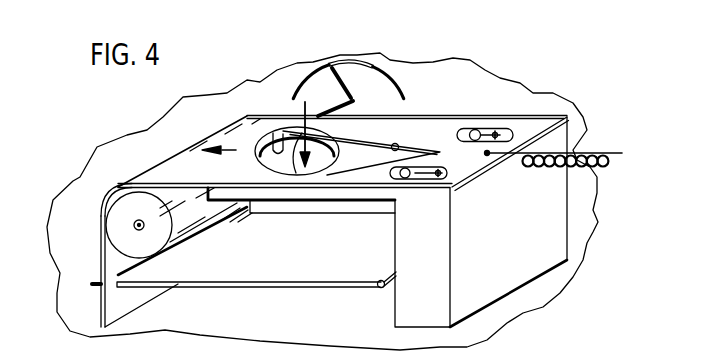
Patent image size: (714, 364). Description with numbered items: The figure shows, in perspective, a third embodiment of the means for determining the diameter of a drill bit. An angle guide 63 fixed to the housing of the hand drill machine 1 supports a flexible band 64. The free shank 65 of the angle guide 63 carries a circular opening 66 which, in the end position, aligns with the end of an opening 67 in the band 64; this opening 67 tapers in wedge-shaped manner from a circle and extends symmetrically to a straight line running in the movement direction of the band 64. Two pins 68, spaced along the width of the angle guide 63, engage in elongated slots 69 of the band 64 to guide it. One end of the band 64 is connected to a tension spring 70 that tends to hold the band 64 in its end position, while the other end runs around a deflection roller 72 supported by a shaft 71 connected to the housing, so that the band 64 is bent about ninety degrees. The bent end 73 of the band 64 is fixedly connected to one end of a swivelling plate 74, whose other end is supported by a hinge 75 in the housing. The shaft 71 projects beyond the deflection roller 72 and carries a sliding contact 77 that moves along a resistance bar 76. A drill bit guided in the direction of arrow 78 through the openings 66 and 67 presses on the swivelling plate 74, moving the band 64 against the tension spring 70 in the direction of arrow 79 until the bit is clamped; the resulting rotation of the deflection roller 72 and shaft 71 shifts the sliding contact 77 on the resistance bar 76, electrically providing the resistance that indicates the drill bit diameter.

The hand drill machine 1 is at (513, 312).
The angle guide 63 is at (552, 240).
The flexible band 64 is at (537, 122).
The free shank 65 is at (327, 202).
The circular opening 66 is at (274, 130).
The opening 67 is at (397, 144).
The pins 68 is at (476, 130).
The elongated slots 69 is at (495, 130).
The tension spring 70 is at (580, 155).
The shaft 71 is at (134, 225).
The deflection roller 72 is at (128, 205).
The bent end 73 is at (102, 253).
The swivelling plate 74 is at (227, 268).
The hinge 75 is at (377, 288).
The resistance bar 76 is at (374, 72).
The sliding contact 77 is at (331, 68).
The arrow 78 is at (337, 152).
The arrow 79 is at (222, 146).